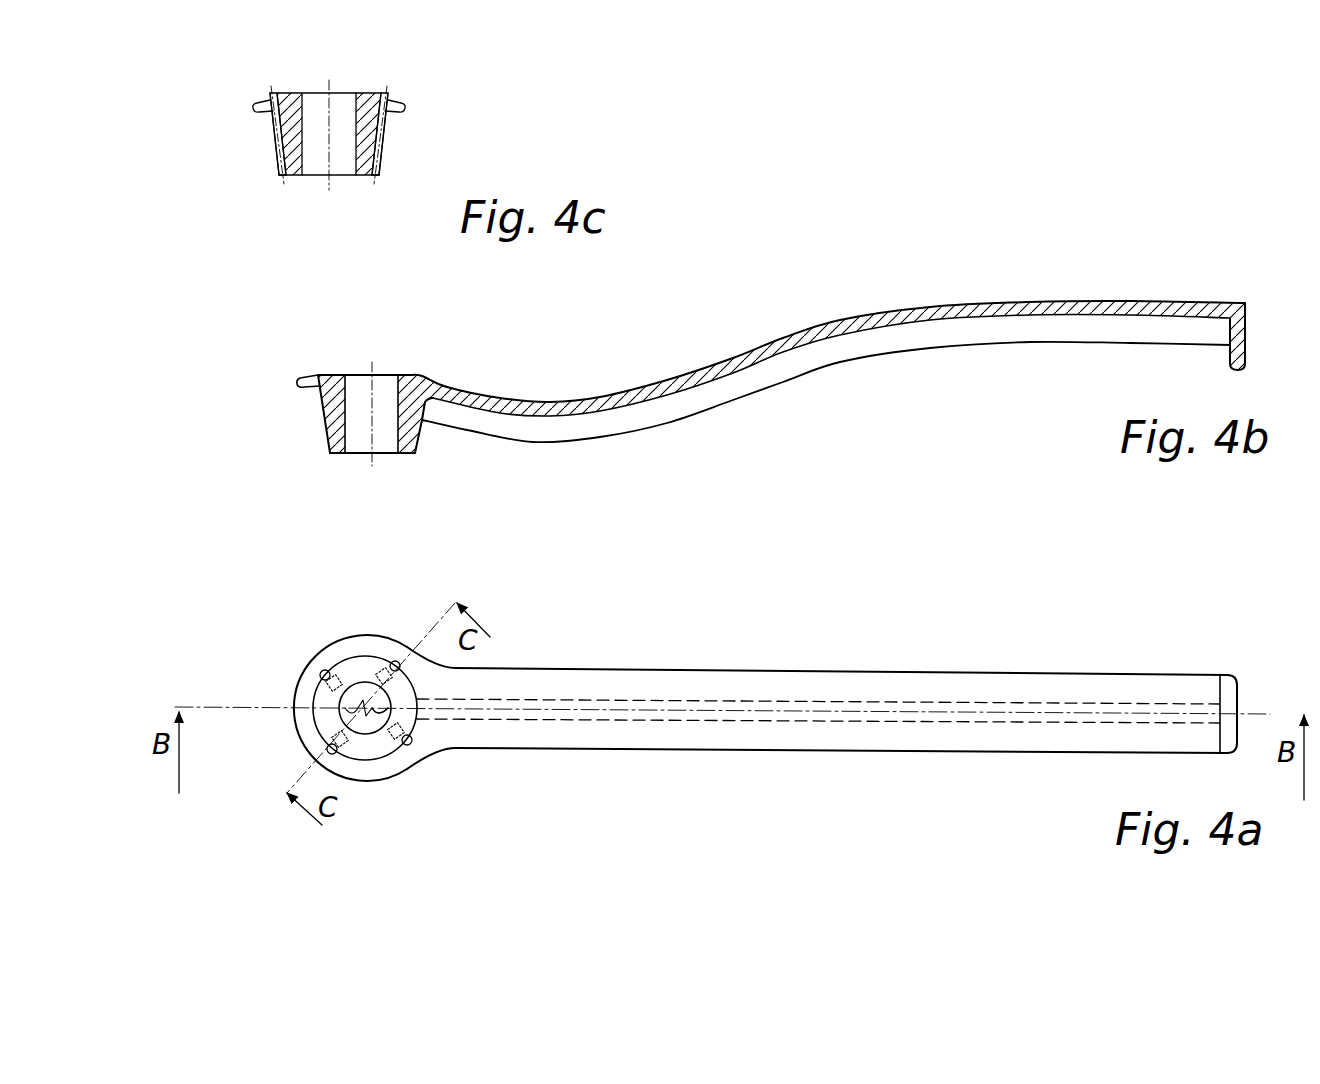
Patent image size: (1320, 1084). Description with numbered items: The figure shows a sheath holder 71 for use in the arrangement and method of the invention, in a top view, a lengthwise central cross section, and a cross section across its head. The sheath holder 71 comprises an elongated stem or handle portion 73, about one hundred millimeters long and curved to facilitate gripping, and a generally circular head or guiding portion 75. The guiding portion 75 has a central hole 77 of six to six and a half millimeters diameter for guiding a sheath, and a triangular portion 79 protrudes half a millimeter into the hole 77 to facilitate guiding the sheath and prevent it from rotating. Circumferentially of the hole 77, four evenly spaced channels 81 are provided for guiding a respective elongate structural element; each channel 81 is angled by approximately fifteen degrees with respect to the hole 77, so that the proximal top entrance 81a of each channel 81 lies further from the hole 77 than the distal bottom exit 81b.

In FIG. 4A, the sheath holder 71 is at (253, 487).
In FIG. 4B, the handle portion 73 is at (862, 320).
In FIG. 4A, the handle portion 73 is at (862, 686).
In FIG. 4C, the guiding portion 75 is at (163, 135).
In FIG. 4B, the guiding portion 75 is at (410, 373).
In FIG. 4A, the guiding portion 75 is at (362, 634).
In FIG. 4C, the central hole 77 is at (337, 103).
In FIG. 4A, the central hole 77 is at (353, 712).
In FIG. 4A, the triangular portion 79 is at (378, 733).
In FIG. 4C, the channels 81 is at (272, 133).
In FIG. 4A, the channels 81 is at (394, 660).
In FIG. 4C, the proximal top entrance 81a is at (272, 99).
In FIG. 4C, the distal bottom exit 81b is at (292, 177).